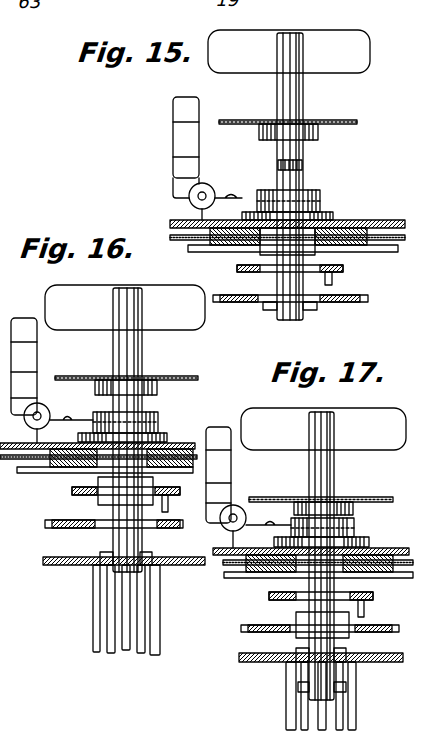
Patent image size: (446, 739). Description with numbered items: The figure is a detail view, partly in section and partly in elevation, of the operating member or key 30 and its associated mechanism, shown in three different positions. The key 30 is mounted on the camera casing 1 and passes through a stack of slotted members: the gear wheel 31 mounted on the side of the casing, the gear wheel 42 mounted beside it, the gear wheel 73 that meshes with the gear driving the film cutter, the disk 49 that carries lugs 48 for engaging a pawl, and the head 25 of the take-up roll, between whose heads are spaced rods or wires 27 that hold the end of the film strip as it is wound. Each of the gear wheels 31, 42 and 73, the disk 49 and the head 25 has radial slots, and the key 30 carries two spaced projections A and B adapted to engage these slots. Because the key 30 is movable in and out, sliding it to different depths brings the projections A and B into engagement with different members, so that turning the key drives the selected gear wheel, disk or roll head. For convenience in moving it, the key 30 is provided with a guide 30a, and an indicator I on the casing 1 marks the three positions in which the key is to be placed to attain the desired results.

In FIG. 15, the operating member or key 30 is at (356, 50).
In FIG. 16, the operating member or key 30 is at (170, 298).
In FIG. 17, the operating member or key 30 is at (391, 415).
In FIG. 15, the guide 30a is at (340, 120).
In FIG. 16, the guide 30a is at (157, 376).
In FIG. 17, the guide 30a is at (379, 497).
In FIG. 15, the gear wheel 31 is at (342, 236).
In FIG. 16, the gear wheel 31 is at (52, 477).
In FIG. 17, the gear wheel 31 is at (263, 560).
In FIG. 15, the casing 1 is at (370, 222).
In FIG. 16, the casing 1 is at (176, 435).
In FIG. 17, the casing 1 is at (383, 548).
In FIG. 15, the gear wheel 42 is at (347, 250).
In FIG. 16, the gear wheel 42 is at (55, 469).
In FIG. 17, the gear wheel 42 is at (249, 575).
In FIG. 15, the lugs 48 is at (333, 282).
In FIG. 16, the lugs 48 is at (168, 510).
In FIG. 17, the lugs 48 is at (364, 612).
In FIG. 15, the disk 49 is at (248, 269).
In FIG. 16, the disk 49 is at (72, 489).
In FIG. 17, the disk 49 is at (269, 597).
In FIG. 15, the gear wheel 73 is at (346, 303).
In FIG. 16, the gear wheel 73 is at (173, 529).
In FIG. 17, the gear wheel 73 is at (241, 630).
In FIG. 16, the head 25 is at (68, 567).
In FIG. 17, the head 25 is at (378, 662).
In FIG. 16, the rods or wires 27 is at (122, 653).
In FIG. 17, the rods or wires 27 is at (318, 720).
In FIG. 15, the projection A is at (319, 200).
In FIG. 16, the projection A is at (98, 496).
In FIG. 17, the projection A is at (296, 635).
In FIG. 15, the projection B is at (270, 311).
In FIG. 16, the projection B is at (110, 556).
In FIG. 17, the projection B is at (298, 690).
In FIG. 15, the indicator I is at (173, 138).
In FIG. 16, the indicator I is at (37, 348).
In FIG. 17, the indicator I is at (213, 427).